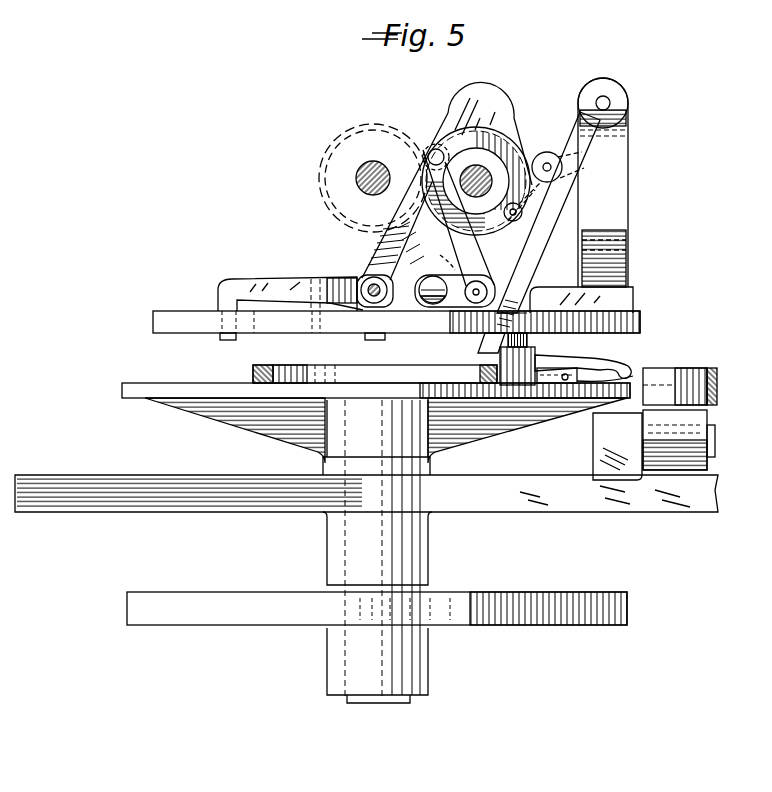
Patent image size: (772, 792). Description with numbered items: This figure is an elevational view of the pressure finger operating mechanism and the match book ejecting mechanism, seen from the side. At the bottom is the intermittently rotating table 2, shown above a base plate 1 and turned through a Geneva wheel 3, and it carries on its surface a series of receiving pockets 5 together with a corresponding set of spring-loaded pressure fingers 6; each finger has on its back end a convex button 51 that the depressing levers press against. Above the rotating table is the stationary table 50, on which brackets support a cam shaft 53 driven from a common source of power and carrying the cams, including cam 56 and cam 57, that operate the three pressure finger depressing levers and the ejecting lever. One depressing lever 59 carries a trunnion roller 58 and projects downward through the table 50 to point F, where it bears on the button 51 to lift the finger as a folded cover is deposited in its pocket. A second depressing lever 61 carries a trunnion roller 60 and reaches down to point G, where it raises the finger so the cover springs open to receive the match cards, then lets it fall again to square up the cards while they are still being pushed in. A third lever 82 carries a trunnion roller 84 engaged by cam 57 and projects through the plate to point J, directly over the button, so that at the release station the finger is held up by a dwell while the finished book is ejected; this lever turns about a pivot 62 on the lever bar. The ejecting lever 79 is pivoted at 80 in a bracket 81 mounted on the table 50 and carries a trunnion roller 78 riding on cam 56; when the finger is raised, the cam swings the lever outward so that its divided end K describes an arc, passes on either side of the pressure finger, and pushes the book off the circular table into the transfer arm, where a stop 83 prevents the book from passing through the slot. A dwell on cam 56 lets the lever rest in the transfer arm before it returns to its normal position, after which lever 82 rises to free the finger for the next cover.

The turntable plate 1 is at (597, 508).
The rotating table 2 is at (131, 383).
The Geneva wheel 3 is at (549, 602).
The receiving pocket 5 is at (636, 378).
The pressure finger 6 is at (590, 365).
The table 50 is at (153, 322).
The button 51 is at (530, 342).
The cam shaft 53 is at (477, 165).
The cam 56 is at (503, 97).
The cam 57 is at (497, 127).
The trunnion roller 58 is at (420, 222).
The lever 59 is at (458, 266).
The trunnion roller 60 is at (432, 148).
The lever 61 is at (370, 253).
The pivot 62 is at (497, 287).
The trunnion roller 78 is at (547, 152).
The ejecting lever 79 is at (553, 236).
The pivot 80 is at (612, 109).
The bracket 81 is at (618, 148).
The lever 82 is at (677, 377).
The stop 83 is at (711, 397).
The trunnion roller 84 is at (522, 213).
The point F is at (373, 346).
The point G is at (228, 346).
The point J is at (531, 322).
The end K is at (460, 348).